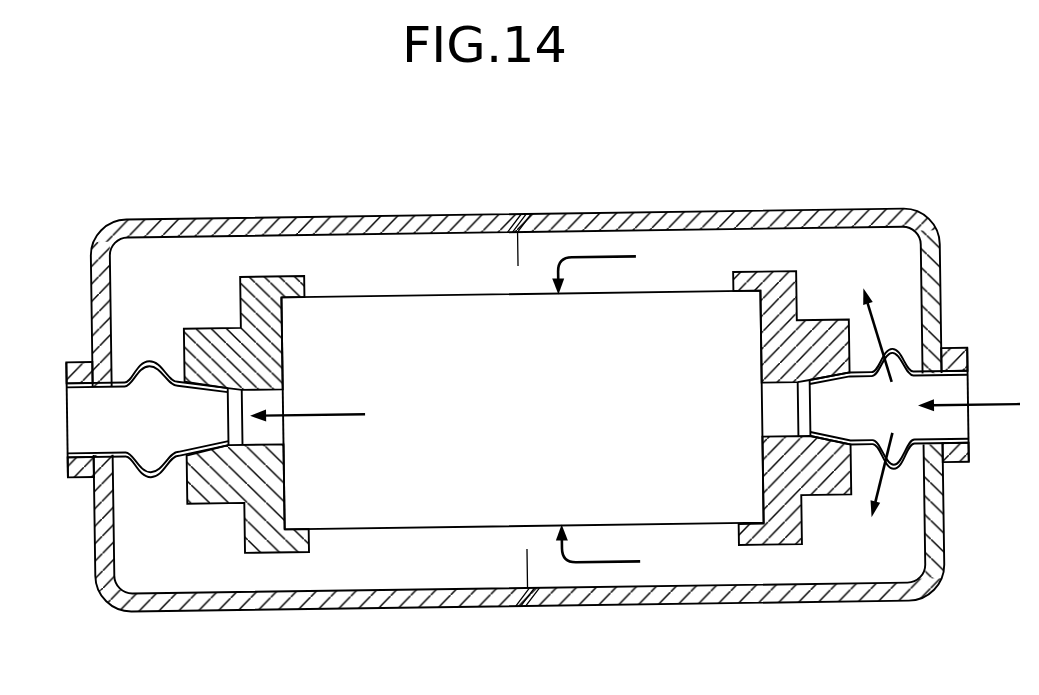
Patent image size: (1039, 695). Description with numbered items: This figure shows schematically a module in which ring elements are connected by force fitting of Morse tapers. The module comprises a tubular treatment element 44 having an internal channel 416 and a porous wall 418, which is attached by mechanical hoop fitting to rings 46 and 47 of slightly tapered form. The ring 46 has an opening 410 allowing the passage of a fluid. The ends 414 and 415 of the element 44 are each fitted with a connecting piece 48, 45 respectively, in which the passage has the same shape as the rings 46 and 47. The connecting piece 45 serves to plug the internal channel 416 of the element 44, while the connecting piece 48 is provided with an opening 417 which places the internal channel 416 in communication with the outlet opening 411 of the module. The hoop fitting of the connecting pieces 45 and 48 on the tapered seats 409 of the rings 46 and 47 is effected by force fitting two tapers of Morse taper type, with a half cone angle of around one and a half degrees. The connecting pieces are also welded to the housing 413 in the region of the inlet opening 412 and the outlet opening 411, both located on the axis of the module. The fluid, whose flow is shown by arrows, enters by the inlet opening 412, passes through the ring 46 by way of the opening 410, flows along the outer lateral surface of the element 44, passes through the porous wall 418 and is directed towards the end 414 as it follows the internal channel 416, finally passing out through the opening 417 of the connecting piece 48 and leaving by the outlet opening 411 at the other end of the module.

The tubular treatment element 44 is at (437, 550).
The connecting piece 45 is at (782, 520).
The ring 46 is at (907, 498).
The ring 47 is at (147, 494).
The connecting piece 48 is at (268, 541).
The tapered seats 409 is at (207, 387).
The opening 410 is at (883, 396).
The outlet opening 411 is at (105, 414).
The inlet opening 412 is at (924, 405).
The housing 413 is at (666, 627).
The end 414 is at (298, 396).
The end 415 is at (752, 392).
The internal channel 416 is at (445, 388).
The opening 417 is at (260, 404).
The porous wall 418 is at (652, 303).